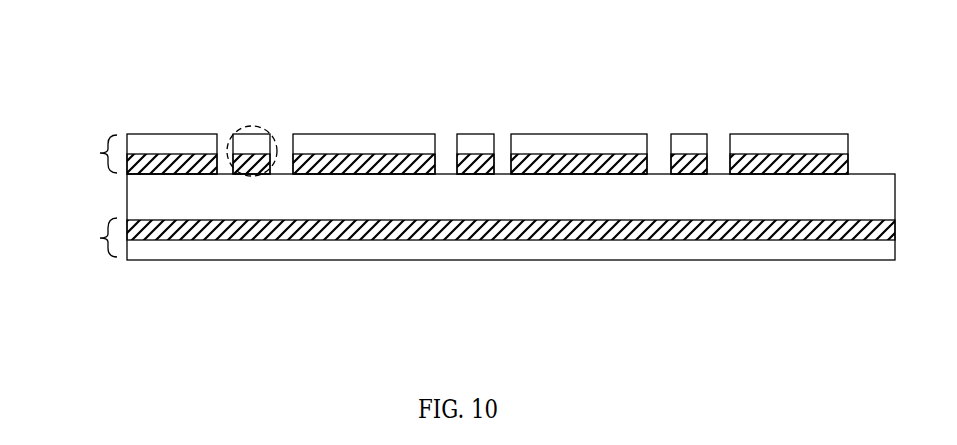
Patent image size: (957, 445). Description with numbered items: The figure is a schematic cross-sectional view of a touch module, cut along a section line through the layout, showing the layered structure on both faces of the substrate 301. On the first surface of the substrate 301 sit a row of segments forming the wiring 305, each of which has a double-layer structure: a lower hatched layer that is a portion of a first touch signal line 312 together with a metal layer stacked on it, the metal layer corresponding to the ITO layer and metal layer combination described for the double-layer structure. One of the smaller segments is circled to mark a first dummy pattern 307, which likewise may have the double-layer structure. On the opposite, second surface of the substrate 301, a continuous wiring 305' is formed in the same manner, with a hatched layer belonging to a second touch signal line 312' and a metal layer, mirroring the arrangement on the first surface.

The substrate 301 is at (511, 217).
The wiring 305 is at (72, 156).
The wiring 305' is at (72, 239).
The first dummy pattern 307 is at (270, 136).
The first touch signal line 312 is at (162, 92).
The second touch signal line 312' is at (511, 293).